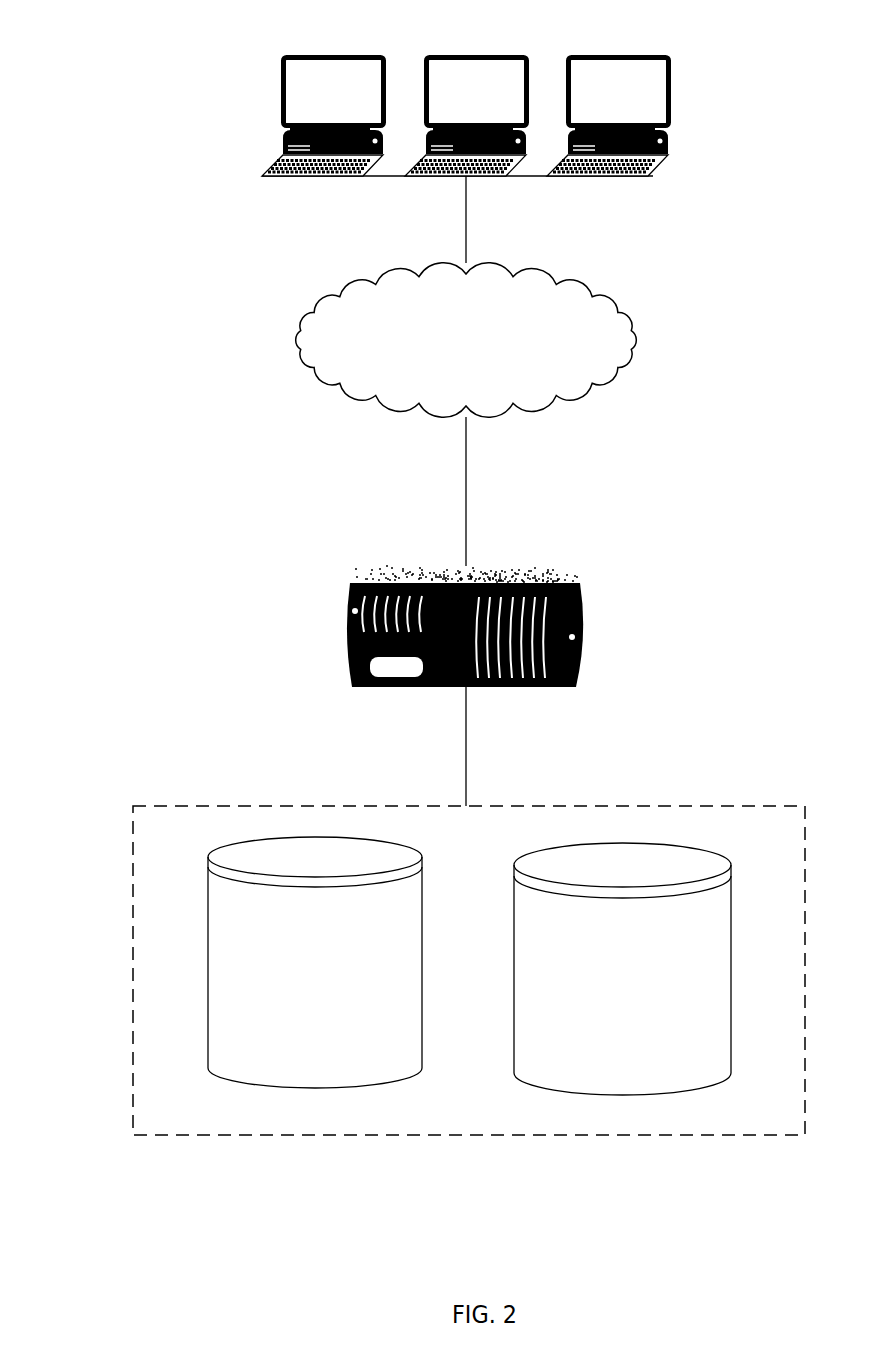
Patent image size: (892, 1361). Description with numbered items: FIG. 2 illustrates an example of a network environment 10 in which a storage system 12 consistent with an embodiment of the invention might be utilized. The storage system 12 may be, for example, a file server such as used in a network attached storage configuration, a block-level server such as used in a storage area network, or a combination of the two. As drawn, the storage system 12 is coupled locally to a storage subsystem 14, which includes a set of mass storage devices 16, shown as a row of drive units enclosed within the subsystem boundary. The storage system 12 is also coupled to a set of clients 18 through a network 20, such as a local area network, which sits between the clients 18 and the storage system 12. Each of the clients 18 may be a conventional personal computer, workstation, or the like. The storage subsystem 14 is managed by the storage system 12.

The network environment 10 is at (111, 98).
The storage system 12 is at (705, 555).
The storage subsystem 14 is at (592, 1125).
The mass storage devices 16 is at (514, 930).
The clients 18 is at (537, 39).
The network 20 is at (535, 336).